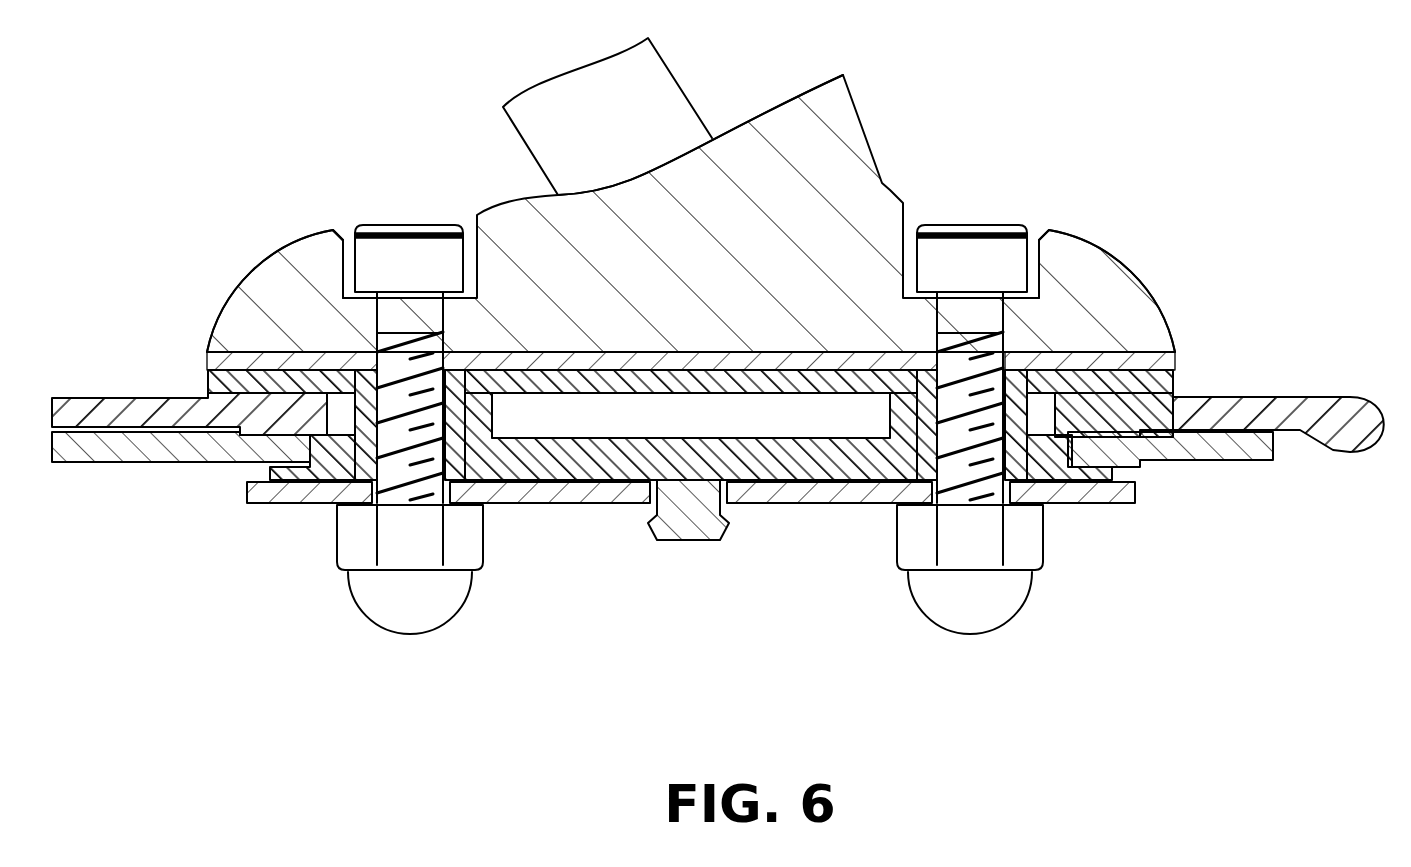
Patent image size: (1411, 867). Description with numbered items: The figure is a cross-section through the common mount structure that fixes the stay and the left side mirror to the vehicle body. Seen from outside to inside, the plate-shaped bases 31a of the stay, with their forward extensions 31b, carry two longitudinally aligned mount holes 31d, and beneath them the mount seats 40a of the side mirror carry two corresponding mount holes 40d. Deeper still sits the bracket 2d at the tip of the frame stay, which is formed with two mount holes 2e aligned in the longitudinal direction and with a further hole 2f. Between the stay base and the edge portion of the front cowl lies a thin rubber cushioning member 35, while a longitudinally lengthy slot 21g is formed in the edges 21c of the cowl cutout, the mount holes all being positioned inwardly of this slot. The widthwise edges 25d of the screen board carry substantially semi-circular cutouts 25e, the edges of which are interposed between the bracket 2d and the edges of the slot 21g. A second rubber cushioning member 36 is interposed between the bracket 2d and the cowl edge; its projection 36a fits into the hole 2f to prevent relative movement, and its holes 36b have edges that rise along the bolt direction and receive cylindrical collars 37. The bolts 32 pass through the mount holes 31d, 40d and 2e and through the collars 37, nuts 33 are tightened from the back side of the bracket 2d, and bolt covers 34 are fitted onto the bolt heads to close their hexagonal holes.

The bracket 2d is at (597, 503).
The mount holes 2e is at (382, 492).
The hole 2f is at (668, 500).
The edges 21c is at (115, 410).
The slot 21g is at (225, 352).
The widthwise edges 25d is at (1247, 448).
The cutouts 25e is at (320, 455).
The bases 31a is at (660, 350).
The extensions 31b is at (658, 50).
The mount holes 31d is at (432, 353).
The bolts 32 is at (408, 257).
The nuts 33 is at (412, 617).
The bolt covers 34 is at (692, 325).
The cushioning member 35 is at (733, 353).
The cushioning member 36 is at (780, 470).
The projection 36a is at (700, 528).
The holes 36b is at (483, 410).
The collars 37 is at (370, 383).
The mount seats 40a is at (857, 145).
The mount holes 40d is at (383, 305).